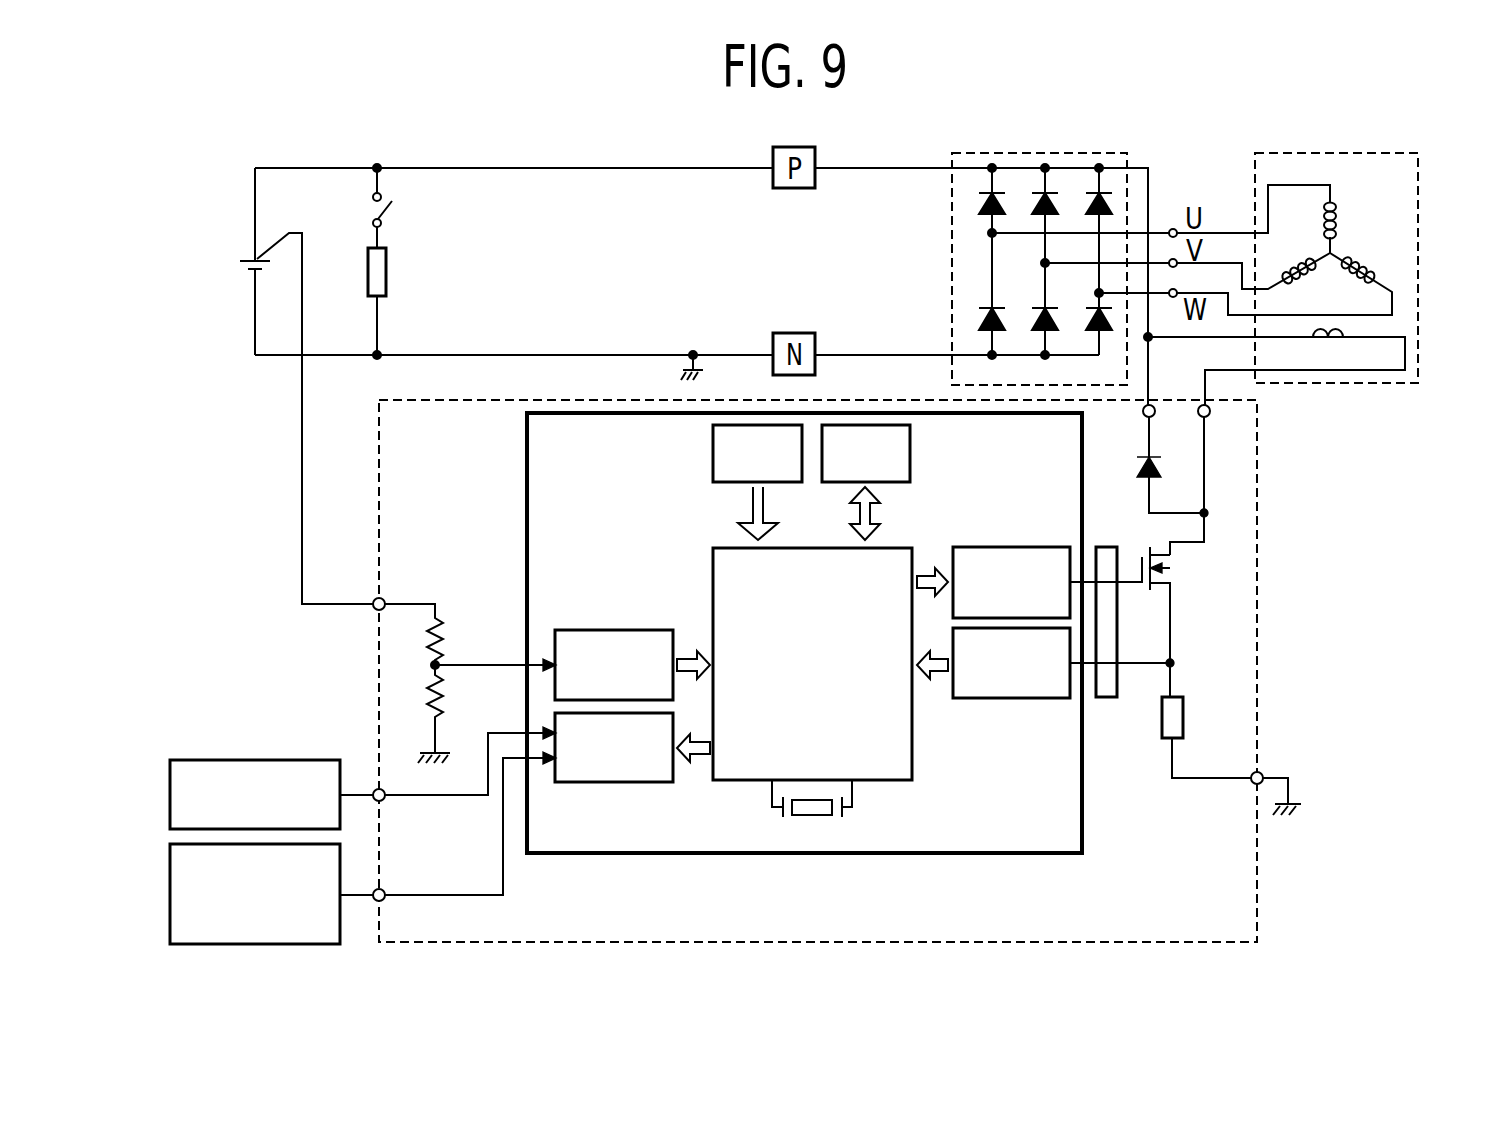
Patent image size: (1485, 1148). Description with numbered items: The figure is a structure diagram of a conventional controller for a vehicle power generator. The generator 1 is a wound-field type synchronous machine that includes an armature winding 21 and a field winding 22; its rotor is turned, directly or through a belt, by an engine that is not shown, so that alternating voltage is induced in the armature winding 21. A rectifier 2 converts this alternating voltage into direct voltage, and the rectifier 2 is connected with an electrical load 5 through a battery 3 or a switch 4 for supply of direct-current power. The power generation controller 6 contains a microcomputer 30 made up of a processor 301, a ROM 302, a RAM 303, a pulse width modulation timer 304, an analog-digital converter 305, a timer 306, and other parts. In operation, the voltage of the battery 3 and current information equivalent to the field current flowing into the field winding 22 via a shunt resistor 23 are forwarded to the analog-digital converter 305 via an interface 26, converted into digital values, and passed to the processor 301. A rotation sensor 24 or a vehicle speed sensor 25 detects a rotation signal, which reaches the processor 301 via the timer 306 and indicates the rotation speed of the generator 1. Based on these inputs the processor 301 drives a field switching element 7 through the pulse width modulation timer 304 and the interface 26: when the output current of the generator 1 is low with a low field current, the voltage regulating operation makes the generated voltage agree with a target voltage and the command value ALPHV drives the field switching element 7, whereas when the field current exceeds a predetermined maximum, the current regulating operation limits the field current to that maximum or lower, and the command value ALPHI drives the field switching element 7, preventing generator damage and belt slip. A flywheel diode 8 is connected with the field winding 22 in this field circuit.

The generator 1 is at (1420, 170).
The rectifier 2 is at (950, 202).
The battery 3 is at (248, 253).
The switch 4 is at (392, 207).
The electrical load 5 is at (386, 276).
The power generation controller 6 is at (377, 427).
The field switching element 7 is at (1142, 556).
The flywheel diode 8 is at (1136, 462).
The armature winding 21 is at (1337, 218).
The field winding 22 is at (1332, 345).
The shunt resistor 23 is at (1184, 716).
The rotation sensor 24 is at (168, 775).
The vehicle speed sensor 25 is at (168, 866).
The interface 26 is at (1105, 699).
The microcomputer 30 is at (525, 450).
The processor 301 is at (890, 782).
The ROM 302 is at (712, 450).
The RAM 303 is at (912, 452).
The pulse width modulation (PWM) timer 304 is at (1039, 546).
The analog-digital (A/D) converter 305 is at (640, 630).
The timer 306 is at (640, 782).